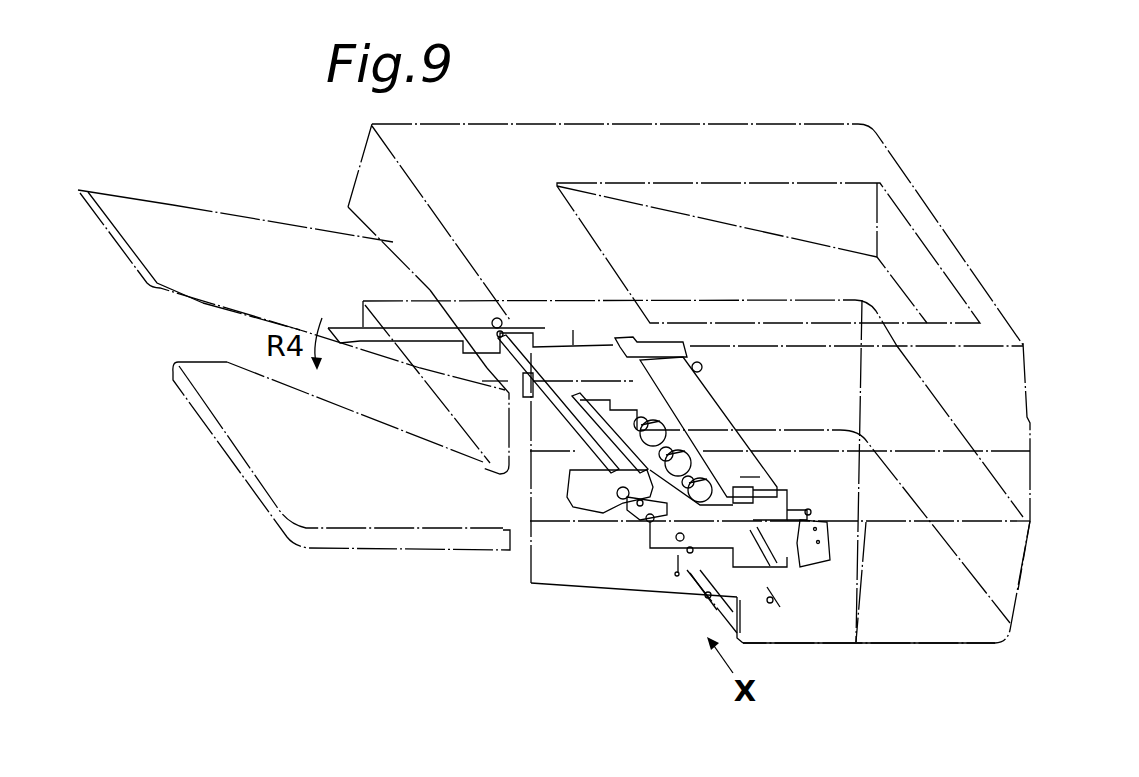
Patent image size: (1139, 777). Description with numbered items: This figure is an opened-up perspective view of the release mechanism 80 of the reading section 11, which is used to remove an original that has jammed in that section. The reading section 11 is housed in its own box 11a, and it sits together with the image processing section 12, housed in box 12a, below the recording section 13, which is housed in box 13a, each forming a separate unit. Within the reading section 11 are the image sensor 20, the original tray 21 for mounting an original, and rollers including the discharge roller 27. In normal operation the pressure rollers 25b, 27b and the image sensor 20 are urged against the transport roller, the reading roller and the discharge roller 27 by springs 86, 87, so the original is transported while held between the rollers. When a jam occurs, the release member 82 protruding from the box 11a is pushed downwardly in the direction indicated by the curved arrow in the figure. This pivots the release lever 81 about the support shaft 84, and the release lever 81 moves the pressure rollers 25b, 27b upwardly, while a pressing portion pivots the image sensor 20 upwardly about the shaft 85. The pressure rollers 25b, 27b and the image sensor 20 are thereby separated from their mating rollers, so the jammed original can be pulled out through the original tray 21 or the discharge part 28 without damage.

The reading section 11 is at (842, 645).
The box 11a is at (813, 645).
The image processing section 12 is at (963, 644).
The box 12a is at (1022, 553).
The recording section 13 is at (1001, 306).
The box 13a is at (1028, 420).
The image sensor 20 is at (703, 410).
The original tray 21 is at (410, 555).
The pressure roller 25b is at (673, 548).
The discharge roller 27 is at (650, 417).
The pressure roller 27b is at (740, 452).
The discharge part 28 is at (623, 605).
The release mechanism 80 is at (672, 320).
The release lever 81 is at (575, 343).
The release member 82 is at (340, 336).
The support shaft 84 is at (502, 318).
The shaft 85 is at (797, 503).
The spring 86 is at (670, 560).
The spring 87 is at (763, 597).